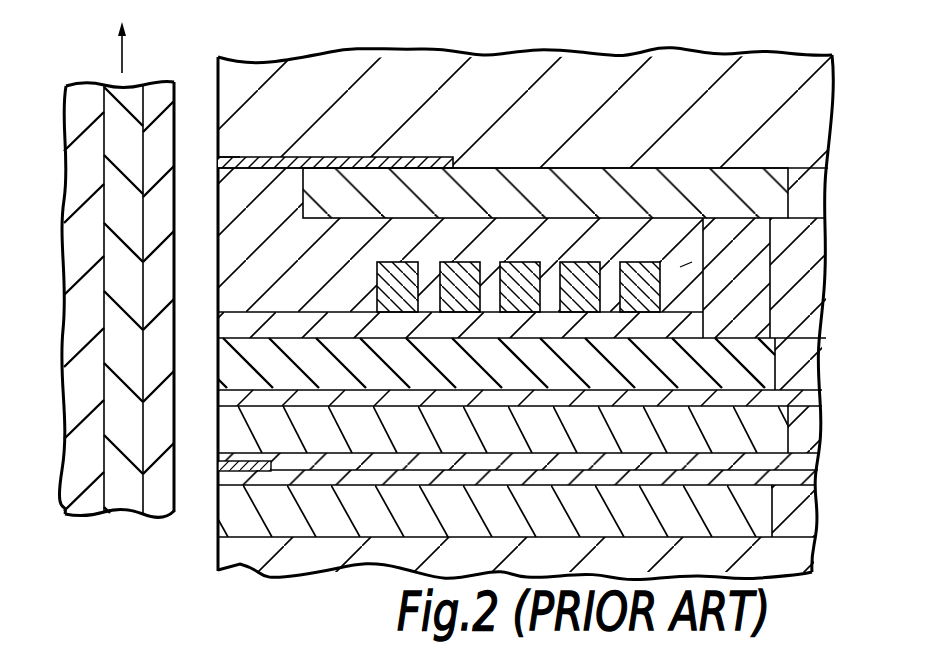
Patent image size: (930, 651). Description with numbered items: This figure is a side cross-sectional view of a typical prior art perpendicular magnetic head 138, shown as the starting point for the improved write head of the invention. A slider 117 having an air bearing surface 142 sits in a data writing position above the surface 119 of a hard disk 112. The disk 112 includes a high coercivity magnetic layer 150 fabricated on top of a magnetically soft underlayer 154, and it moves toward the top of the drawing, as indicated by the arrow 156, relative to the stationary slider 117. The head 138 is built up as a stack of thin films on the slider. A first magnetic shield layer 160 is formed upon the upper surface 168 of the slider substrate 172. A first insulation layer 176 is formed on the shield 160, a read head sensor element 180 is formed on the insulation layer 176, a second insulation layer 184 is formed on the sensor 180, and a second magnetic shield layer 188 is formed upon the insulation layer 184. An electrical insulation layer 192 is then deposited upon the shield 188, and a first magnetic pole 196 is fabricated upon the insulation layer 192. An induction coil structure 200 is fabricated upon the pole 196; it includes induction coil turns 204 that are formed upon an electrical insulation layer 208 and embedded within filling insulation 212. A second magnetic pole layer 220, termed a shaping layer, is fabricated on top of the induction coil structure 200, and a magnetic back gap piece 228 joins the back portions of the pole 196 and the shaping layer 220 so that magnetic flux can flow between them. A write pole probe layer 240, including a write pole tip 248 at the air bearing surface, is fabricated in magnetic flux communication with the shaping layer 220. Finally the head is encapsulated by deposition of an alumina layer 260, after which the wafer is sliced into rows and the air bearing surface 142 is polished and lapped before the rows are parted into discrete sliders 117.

The hard disk 112 is at (82, 100).
The arrow 156 is at (118, 50).
The air bearing surface (ABS) 142 is at (210, 84).
The perpendicular magnetic head 138 is at (310, 42).
The write pole tip 248 is at (227, 157).
The write pole probe layer 240 is at (323, 163).
The alumina layer 260 is at (672, 119).
The second magnetic pole layer (shaping layer) 220 is at (768, 198).
The filling insulation 212 is at (322, 267).
The induction coil turns 204 is at (557, 270).
The induction coil structure 200 is at (692, 262).
The magnetic back gap piece 228 is at (757, 278).
The electrical insulation layer 208 is at (690, 328).
The first magnetic pole (P1) 196 is at (760, 372).
The electrical insulation layer 192 is at (800, 400).
The second magnetic shield layer (S2) 188 is at (768, 435).
The second insulation layer (G2) 184 is at (800, 463).
The read head sensor element 180 is at (251, 462).
The first insulation layer (G1) 176 is at (802, 478).
The first magnetic shield layer (S1) 160 is at (763, 503).
The upper surface 168 is at (810, 538).
The slider substrate 172 is at (777, 556).
The slider 117 is at (335, 568).
The magnetically soft underlayer 154 is at (115, 509).
The high coercivity magnetic layer 150 is at (143, 514).
The surface 119 is at (173, 494).